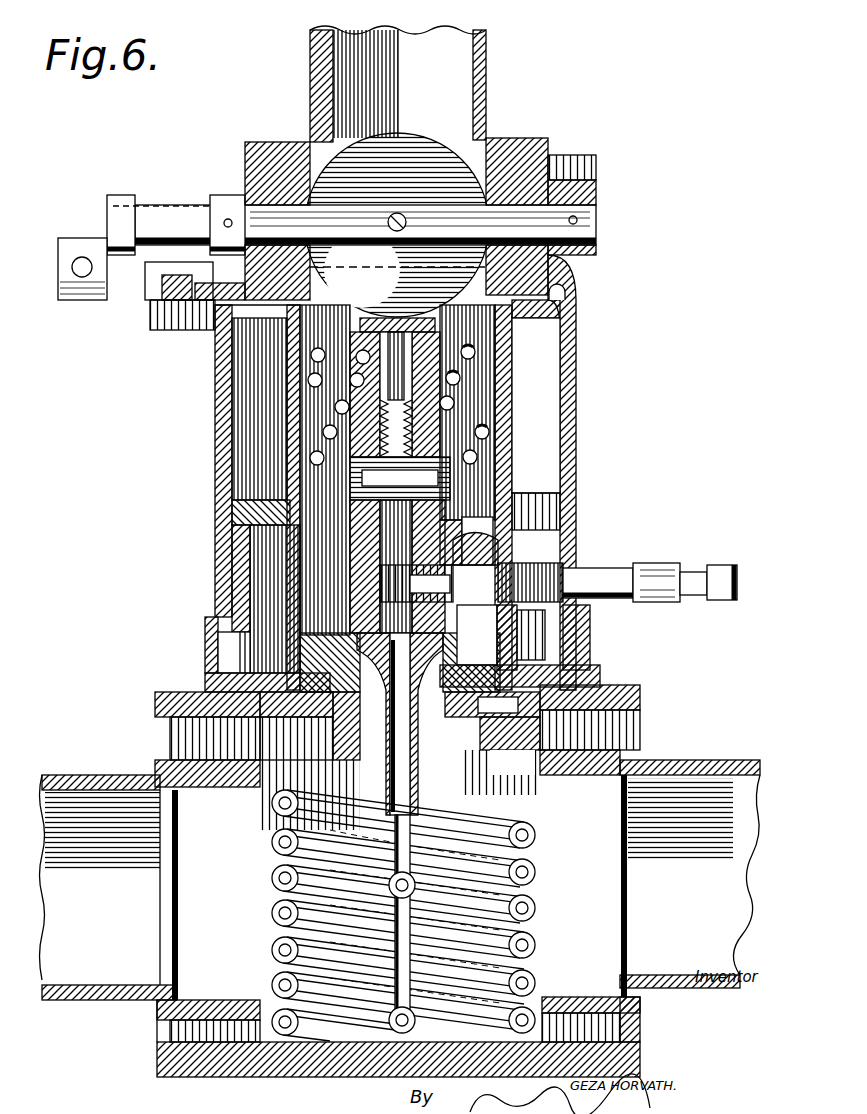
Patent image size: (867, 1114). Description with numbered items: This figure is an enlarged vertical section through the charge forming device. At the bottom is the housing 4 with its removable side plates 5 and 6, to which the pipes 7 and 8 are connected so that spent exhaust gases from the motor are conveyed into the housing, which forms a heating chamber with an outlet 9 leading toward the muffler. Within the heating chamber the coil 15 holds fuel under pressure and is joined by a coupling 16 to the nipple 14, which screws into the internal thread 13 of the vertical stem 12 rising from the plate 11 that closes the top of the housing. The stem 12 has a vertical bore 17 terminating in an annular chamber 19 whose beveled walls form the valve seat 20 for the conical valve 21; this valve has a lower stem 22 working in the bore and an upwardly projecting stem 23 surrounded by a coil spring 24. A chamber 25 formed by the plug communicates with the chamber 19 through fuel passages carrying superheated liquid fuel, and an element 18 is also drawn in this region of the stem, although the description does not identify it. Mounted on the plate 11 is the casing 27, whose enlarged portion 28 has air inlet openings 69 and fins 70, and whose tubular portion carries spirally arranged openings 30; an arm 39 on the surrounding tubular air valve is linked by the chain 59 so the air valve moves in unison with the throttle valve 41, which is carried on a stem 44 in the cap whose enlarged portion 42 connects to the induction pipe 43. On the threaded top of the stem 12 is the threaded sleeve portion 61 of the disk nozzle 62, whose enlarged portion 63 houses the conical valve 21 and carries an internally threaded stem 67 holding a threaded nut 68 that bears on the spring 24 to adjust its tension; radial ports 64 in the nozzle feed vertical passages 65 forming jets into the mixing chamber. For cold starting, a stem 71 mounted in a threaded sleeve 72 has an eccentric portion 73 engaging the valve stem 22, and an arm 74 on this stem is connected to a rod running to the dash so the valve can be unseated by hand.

The housing 4 is at (312, 1078).
The removable side plate 5 is at (160, 1005).
The removable side plate 6 is at (652, 760).
The pipe 7 is at (690, 881).
The pipe 8 is at (109, 887).
The outlet 9 is at (537, 930).
The plate 11 is at (260, 692).
The vertical stem 12 is at (212, 622).
The internal thread 13 is at (500, 700).
The nipple 14 is at (420, 675).
The coil 15 is at (537, 872).
The coupling 16 is at (412, 800).
The vertical bore 17 is at (330, 598).
The sleeve shoulder 18 is at (232, 510).
The chamber 19 is at (462, 541).
The valve seat 20 is at (452, 483).
The conical valve 21 is at (470, 500).
The stem 22 is at (504, 549).
The upwardly projecting stem 23 is at (435, 340).
The coil spring 24 is at (415, 440).
The chamber 25 is at (235, 652).
The casing 27 is at (210, 668).
The enlarged portion 28 is at (270, 570).
The spirally arranged openings 30 is at (497, 400).
The arm 39 is at (185, 340).
The throttle valve 41 is at (397, 224).
The enlarged portion 42 is at (247, 180).
The induction pipe 43 is at (470, 70).
The stem 44 is at (330, 212).
The chain 59 is at (135, 300).
The threaded sleeve portion 61 is at (563, 565).
The disk nozzle 62 is at (560, 512).
The enlarged portion 63 is at (486, 430).
The radial ports 64 is at (225, 520).
The vertical passages 65 is at (287, 490).
The internally threaded stem 67 is at (456, 382).
The threaded nut 68 is at (468, 352).
The air inlet openings 69 is at (245, 545).
The fins 70 is at (170, 727).
The stem 71 is at (477, 635).
The threaded sleeve 72 is at (590, 628).
The eccentric portion 73 is at (416, 583).
The arm 74 is at (672, 578).